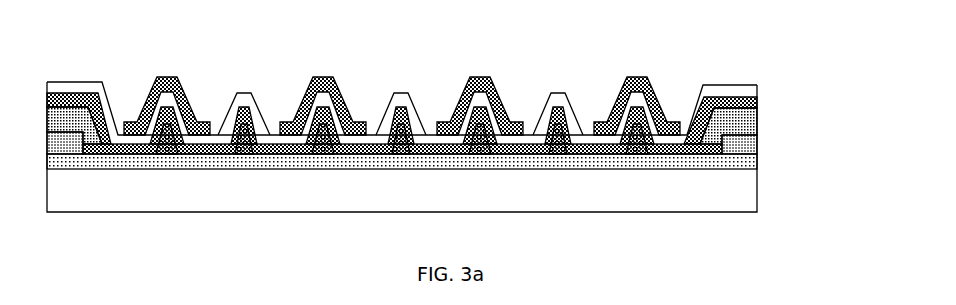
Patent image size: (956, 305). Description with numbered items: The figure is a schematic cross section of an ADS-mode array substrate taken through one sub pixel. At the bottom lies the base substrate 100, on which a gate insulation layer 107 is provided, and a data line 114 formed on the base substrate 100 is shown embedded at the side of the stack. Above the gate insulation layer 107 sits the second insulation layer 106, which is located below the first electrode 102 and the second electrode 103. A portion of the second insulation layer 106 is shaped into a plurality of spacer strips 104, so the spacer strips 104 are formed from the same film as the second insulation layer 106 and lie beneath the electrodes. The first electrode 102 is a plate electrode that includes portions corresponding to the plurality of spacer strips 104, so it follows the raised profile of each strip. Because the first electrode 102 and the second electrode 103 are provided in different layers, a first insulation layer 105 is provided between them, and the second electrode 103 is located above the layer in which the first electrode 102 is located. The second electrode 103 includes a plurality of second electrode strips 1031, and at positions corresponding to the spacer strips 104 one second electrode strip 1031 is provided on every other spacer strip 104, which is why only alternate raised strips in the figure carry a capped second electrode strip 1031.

The base substrate 100 is at (727, 187).
The gate insulation layer 107 is at (733, 163).
The first electrode 102 is at (757, 103).
The second insulation layer 106 is at (757, 120).
The data line 114 is at (757, 141).
The first insulation layer 105 is at (745, 90).
The second electrode 103 is at (648, 92).
The second electrode strip 1031 is at (492, 83).
The spacer strip 104 is at (563, 142).